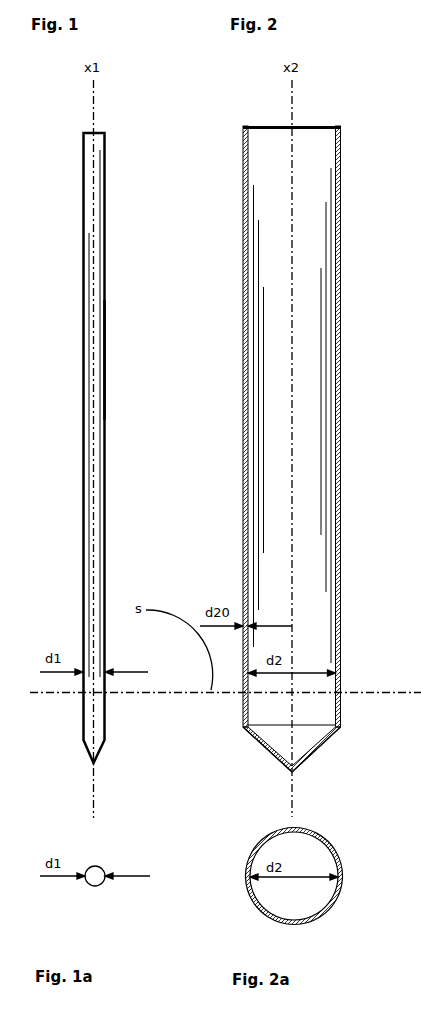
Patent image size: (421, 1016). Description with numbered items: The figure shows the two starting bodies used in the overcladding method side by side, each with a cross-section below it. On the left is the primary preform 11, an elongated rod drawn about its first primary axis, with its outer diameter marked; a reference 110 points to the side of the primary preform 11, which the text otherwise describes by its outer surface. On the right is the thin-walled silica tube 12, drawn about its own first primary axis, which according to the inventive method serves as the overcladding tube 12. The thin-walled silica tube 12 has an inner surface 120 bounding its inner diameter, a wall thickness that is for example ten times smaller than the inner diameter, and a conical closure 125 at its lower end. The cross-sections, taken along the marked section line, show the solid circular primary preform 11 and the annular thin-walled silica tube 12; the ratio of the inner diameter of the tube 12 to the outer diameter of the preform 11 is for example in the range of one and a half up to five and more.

In FIG. 1, the primary preform 11 is at (82, 164).
In FIG. 1A, the primary preform 11 is at (85, 868).
In FIG. 1, the rod surface 110 is at (105, 363).
In FIG. 2, the thin-walled silica tube 12 is at (243, 160).
In FIG. 2A, the thin-walled silica tube 12 is at (247, 862).
In FIG. 2, the inner surface 120 is at (262, 194).
In FIG. 2, the conical closure 125 is at (318, 752).